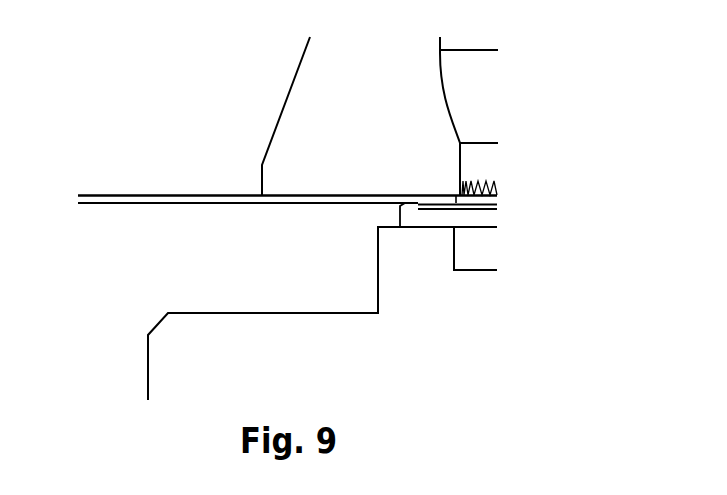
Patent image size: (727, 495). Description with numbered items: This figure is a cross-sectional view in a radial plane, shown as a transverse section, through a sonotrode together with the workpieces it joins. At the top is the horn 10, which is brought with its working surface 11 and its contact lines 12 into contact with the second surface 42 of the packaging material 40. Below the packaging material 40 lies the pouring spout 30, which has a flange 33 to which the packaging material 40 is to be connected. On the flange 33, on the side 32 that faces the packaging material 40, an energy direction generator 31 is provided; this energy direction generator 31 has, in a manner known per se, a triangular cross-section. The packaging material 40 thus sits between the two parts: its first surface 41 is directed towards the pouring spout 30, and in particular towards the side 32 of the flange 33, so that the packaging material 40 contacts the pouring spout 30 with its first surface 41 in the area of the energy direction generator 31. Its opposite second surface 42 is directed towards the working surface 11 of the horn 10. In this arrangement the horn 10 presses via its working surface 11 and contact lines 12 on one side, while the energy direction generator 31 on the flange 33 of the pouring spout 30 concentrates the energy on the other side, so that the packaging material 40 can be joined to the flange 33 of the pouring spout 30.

The horn 10 is at (320, 60).
The working surface 11 is at (280, 178).
The contact lines 12 is at (391, 188).
The pouring spout 30 is at (470, 230).
The energy direction generator 31 is at (415, 206).
The side of the flange 32 is at (497, 186).
The flange 33 is at (483, 220).
The packaging material 40 is at (112, 204).
The first surface 41 is at (168, 205).
The second surface 42 is at (153, 194).